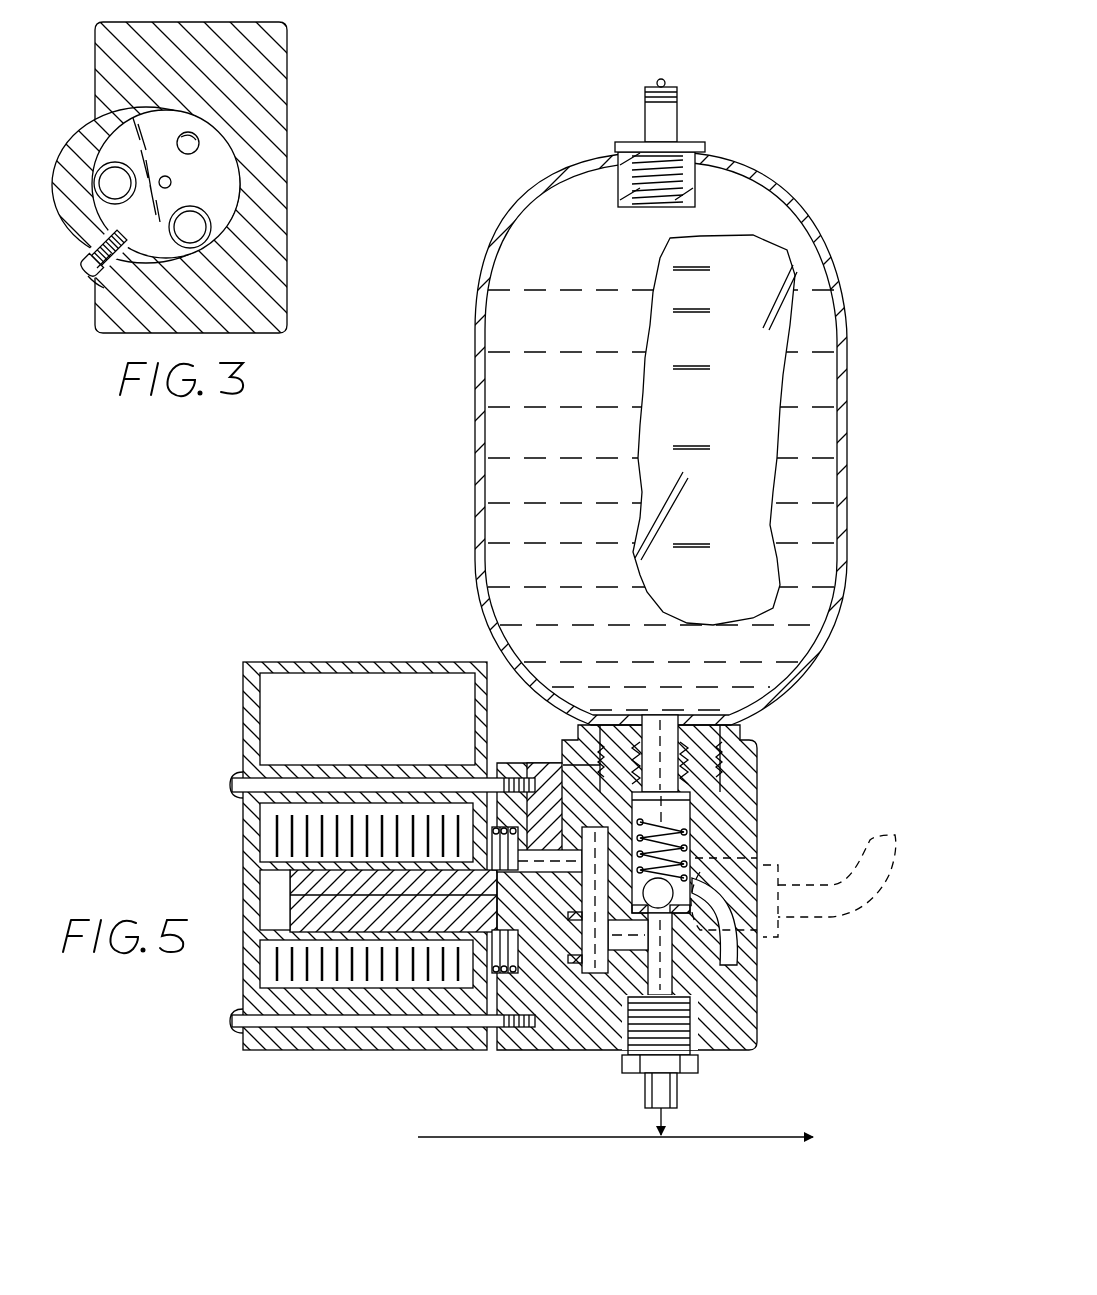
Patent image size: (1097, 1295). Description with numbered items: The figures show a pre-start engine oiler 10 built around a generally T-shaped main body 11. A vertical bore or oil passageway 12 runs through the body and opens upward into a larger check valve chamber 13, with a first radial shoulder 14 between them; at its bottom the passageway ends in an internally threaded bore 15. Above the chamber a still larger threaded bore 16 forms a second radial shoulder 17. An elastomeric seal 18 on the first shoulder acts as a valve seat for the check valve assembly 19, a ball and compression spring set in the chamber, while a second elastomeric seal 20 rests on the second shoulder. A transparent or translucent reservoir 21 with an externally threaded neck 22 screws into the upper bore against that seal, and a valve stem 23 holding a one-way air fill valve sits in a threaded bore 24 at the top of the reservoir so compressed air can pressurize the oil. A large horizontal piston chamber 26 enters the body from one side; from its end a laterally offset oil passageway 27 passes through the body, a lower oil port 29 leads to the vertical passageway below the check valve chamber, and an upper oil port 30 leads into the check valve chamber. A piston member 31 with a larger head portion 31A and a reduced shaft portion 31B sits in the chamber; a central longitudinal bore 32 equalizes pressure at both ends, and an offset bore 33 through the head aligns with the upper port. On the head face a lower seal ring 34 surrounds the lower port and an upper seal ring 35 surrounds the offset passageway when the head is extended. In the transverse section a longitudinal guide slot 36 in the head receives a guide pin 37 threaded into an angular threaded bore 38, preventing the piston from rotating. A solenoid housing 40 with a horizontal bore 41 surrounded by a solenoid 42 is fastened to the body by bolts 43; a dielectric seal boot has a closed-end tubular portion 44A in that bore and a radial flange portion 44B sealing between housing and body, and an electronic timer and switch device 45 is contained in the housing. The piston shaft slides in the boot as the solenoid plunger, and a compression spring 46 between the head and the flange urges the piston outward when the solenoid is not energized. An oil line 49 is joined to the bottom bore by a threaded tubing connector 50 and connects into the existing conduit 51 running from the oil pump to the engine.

In FIG. 5, the pre-start engine oiler 10 is at (466, 509).
In FIG. 3, the main body 11 is at (278, 110).
In FIG. 5, the main body 11 is at (738, 1002).
In FIG. 5, the vertical bore or oil passageway 12 is at (700, 963).
In FIG. 5, the check valve chamber 13 is at (700, 822).
In FIG. 5, the first radial shoulder 14 is at (668, 955).
In FIG. 5, the internally threaded bore 15 is at (690, 1030).
In FIG. 5, the internally threaded bore 16 is at (757, 750).
In FIG. 5, the second radial shoulder 17 is at (692, 806).
In FIG. 5, the elastomeric seal 18 is at (676, 893).
In FIG. 5, the check valve assembly 19 is at (694, 858).
In FIG. 5, the second elastomeric seal 20 is at (745, 776).
In FIG. 5, the reservoir 21 is at (520, 210).
In FIG. 5, the externally threaded neck 22 is at (650, 727).
In FIG. 5, the valve stem 23 is at (678, 106).
In FIG. 5, the threaded bore 24 is at (700, 180).
In FIG. 5, the piston chamber 26 is at (575, 925).
In FIG. 5, the horizontal bore or oil passageway 27 is at (762, 858).
In FIG. 5, the lower horizontal bore or oil port 29 is at (612, 965).
In FIG. 5, the upper horizontal bore or oil port 30 is at (615, 830).
In FIG. 3, the piston member 31 is at (228, 190).
In FIG. 5, the piston member 31 is at (373, 900).
In FIG. 5, the head portion 31A is at (506, 975).
In FIG. 5, the shaft portion 31B is at (398, 917).
In FIG. 3, the central longitudinal bore 32 is at (172, 183).
In FIG. 5, the central longitudinal bore 32 is at (290, 893).
In FIG. 3, the bore 33 is at (200, 142).
In FIG. 5, the bore 33 is at (548, 825).
In FIG. 3, the lower seal ring 34 is at (210, 230).
In FIG. 5, the lower seal ring 34 is at (560, 985).
In FIG. 3, the upper seal ring 35 is at (86, 128).
In FIG. 3, the longitudinal guide slot 36 is at (90, 246).
In FIG. 3, the guide pin 37 is at (104, 290).
In FIG. 3, the angular threaded bore 38 is at (95, 262).
In FIG. 5, the solenoid housing 40 is at (385, 662).
In FIG. 5, the horizontal bore 41 is at (270, 868).
In FIG. 5, the solenoid 42 is at (268, 832).
In FIG. 5, the bolts 43 is at (232, 778).
In FIG. 5, the tubular portion 44A is at (378, 920).
In FIG. 5, the radial flange portion 44B is at (485, 935).
In FIG. 5, the electronic timer and switch device 45 is at (260, 735).
In FIG. 5, the compression spring 46 is at (502, 827).
In FIG. 5, the oil line 49 is at (678, 1092).
In FIG. 5, the threaded tubing connector 50 is at (698, 1066).
In FIG. 5, the existing conduit 51 is at (495, 1140).